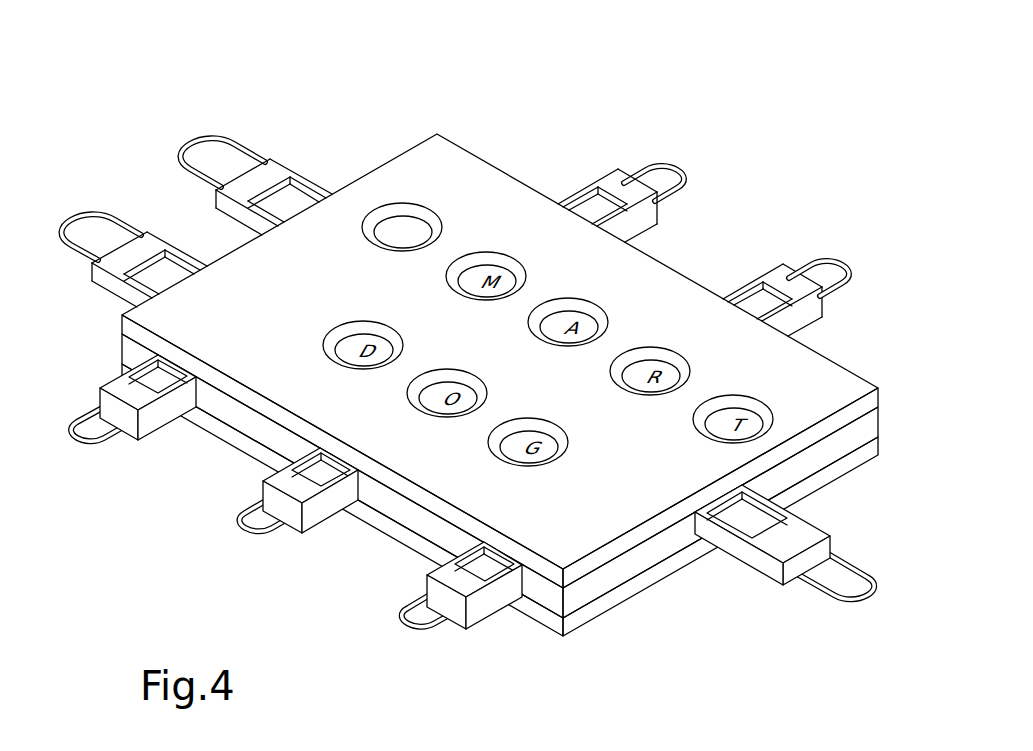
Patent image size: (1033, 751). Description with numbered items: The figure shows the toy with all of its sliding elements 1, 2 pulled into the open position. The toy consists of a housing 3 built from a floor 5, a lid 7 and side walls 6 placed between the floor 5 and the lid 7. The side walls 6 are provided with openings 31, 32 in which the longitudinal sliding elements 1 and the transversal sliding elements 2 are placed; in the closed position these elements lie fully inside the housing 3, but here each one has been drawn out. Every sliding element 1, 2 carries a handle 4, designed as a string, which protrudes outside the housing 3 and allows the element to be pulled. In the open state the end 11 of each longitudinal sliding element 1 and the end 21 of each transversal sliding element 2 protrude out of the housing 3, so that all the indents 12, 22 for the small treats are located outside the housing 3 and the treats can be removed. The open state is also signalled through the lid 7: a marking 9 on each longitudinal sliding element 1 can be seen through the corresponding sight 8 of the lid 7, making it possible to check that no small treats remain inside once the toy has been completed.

The longitudinal sliding element 1 is at (607, 165).
The transversal sliding element 2 is at (485, 396).
The housing 3 is at (535, 333).
The handle 4 is at (202, 143).
The floor 5 is at (848, 460).
The side wall 6 is at (858, 437).
The lid 7 is at (812, 388).
The sight 8 is at (431, 165).
The marking 9 is at (396, 233).
The end of the longitudinal sliding element 11 is at (158, 415).
The indent 12 is at (157, 380).
The end of the transversal sliding element 21 is at (128, 256).
The indent 22 is at (290, 207).
The opening 31 is at (358, 478).
The opening 32 is at (693, 545).